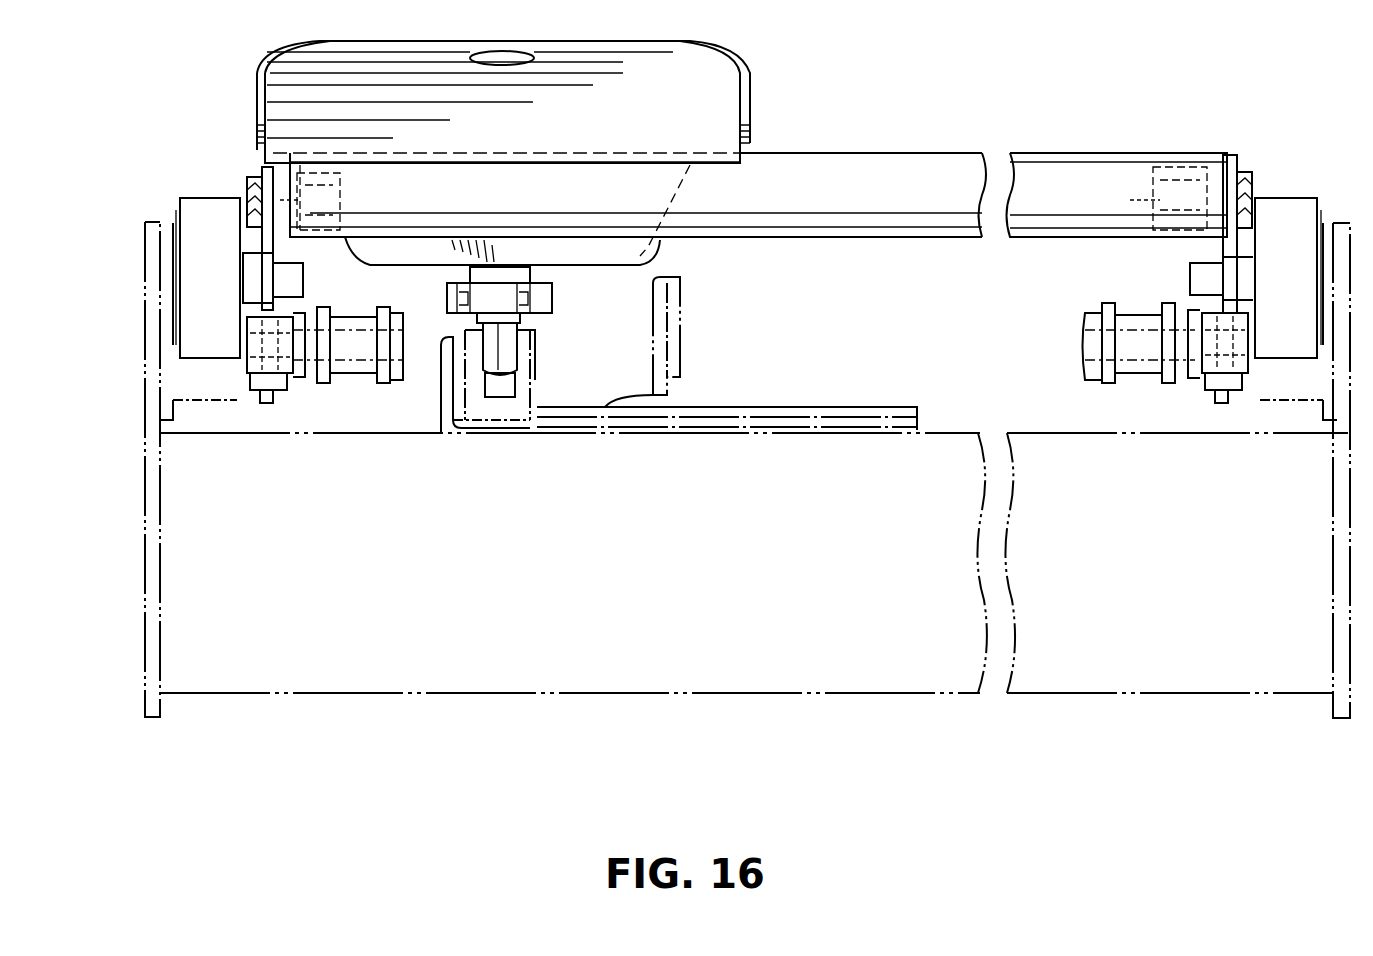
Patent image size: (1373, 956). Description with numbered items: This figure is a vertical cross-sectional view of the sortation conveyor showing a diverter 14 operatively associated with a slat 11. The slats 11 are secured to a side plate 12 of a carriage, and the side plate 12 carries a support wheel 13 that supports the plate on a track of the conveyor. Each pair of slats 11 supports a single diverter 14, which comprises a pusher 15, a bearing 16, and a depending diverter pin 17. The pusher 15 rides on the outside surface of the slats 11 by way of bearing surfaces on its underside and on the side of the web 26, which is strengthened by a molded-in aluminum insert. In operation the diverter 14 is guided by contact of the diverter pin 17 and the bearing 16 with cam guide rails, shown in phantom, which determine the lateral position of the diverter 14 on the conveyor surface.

The slat 11 is at (898, 172).
The side plate 12 is at (275, 247).
The support wheel 13 is at (208, 200).
The diverter 14 is at (200, 108).
The pusher 15 is at (710, 72).
The bearing 16 is at (552, 297).
The diverter pin 17 is at (510, 348).
The web 26 is at (637, 253).